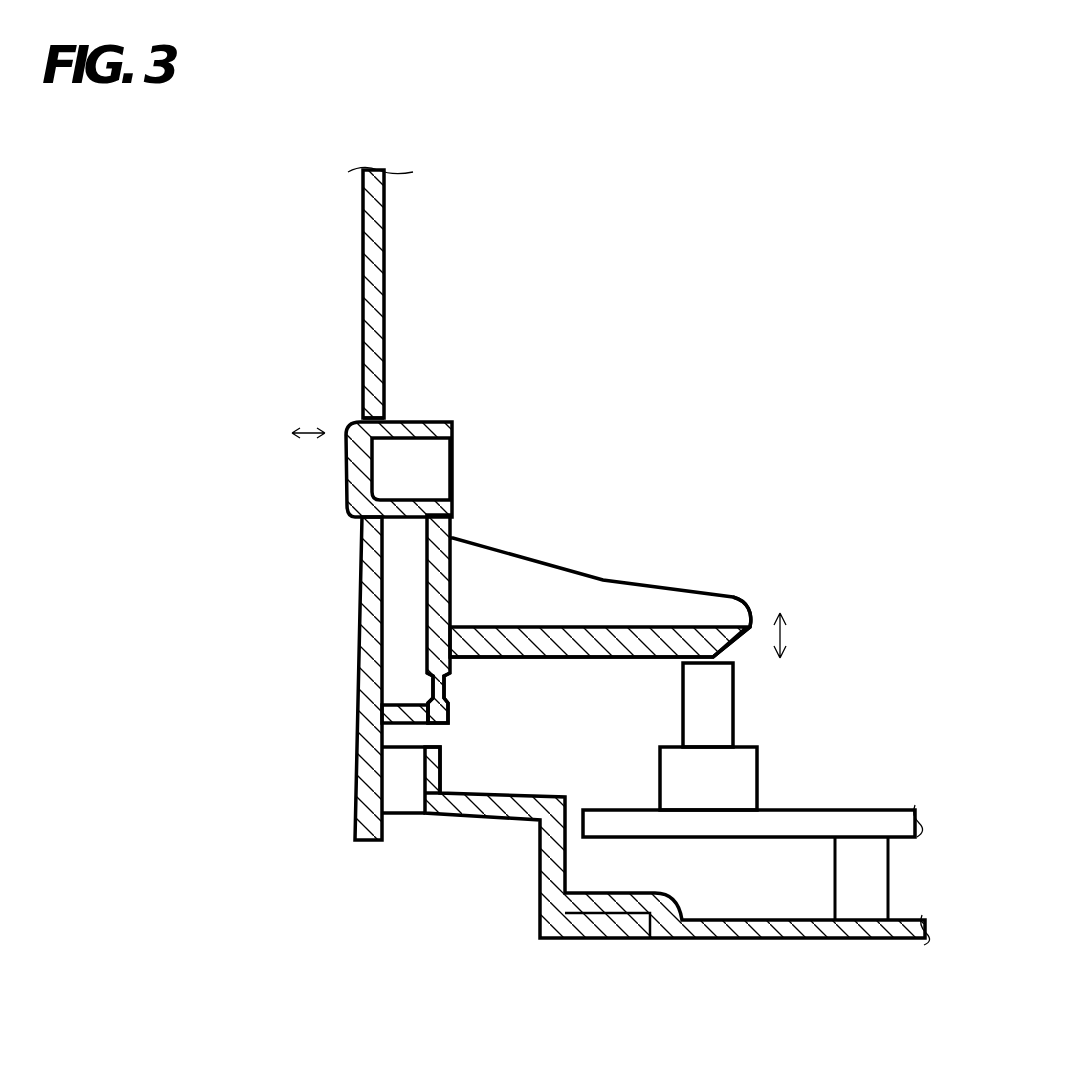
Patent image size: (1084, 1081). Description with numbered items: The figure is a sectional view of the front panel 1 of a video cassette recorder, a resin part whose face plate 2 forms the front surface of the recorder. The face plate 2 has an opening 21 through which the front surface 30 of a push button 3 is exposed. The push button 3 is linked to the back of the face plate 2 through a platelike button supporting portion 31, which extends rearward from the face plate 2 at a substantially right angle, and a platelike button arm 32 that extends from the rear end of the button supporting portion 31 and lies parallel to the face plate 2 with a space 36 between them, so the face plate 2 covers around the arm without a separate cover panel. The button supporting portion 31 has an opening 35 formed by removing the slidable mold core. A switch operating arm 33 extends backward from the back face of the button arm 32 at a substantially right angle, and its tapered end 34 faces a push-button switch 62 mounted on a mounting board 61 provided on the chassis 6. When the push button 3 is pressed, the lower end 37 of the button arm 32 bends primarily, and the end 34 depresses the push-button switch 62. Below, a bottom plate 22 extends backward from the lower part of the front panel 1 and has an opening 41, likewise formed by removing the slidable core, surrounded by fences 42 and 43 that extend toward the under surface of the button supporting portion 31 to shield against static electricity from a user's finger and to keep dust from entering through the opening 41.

The front panel 1 is at (660, 111).
The face plate 2 is at (370, 313).
The opening 21 is at (362, 413).
The bottom plate 22 is at (492, 820).
The push button 3 is at (500, 544).
The front surface 30 is at (360, 468).
The button supporting portion 31 is at (378, 716).
The button arm 32 is at (433, 598).
The switch operating arm 33 is at (573, 595).
The end 34 is at (707, 637).
The opening 35 is at (400, 693).
The space 36 is at (400, 618).
The lower end 37 is at (440, 690).
The opening 41 is at (408, 797).
The fence 42 is at (428, 780).
The fence 43 is at (395, 765).
The chassis 6 is at (832, 925).
The mounting board 61 is at (865, 825).
The push-button switch 62 is at (715, 712).